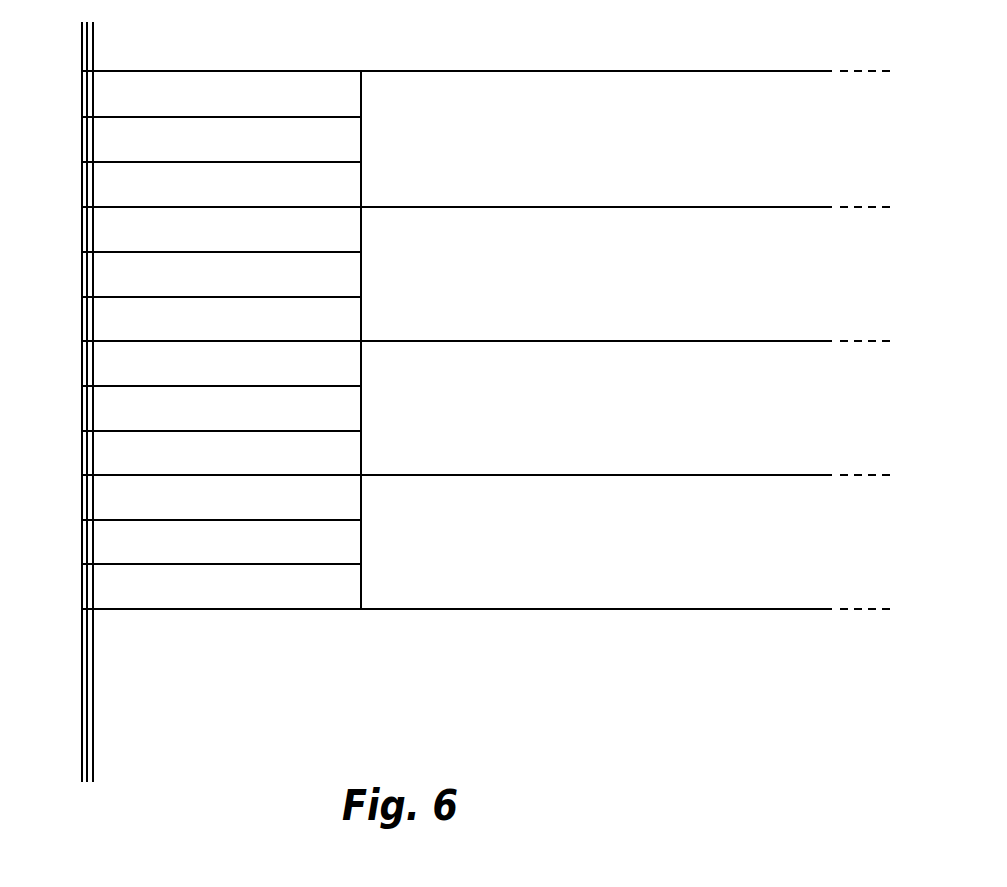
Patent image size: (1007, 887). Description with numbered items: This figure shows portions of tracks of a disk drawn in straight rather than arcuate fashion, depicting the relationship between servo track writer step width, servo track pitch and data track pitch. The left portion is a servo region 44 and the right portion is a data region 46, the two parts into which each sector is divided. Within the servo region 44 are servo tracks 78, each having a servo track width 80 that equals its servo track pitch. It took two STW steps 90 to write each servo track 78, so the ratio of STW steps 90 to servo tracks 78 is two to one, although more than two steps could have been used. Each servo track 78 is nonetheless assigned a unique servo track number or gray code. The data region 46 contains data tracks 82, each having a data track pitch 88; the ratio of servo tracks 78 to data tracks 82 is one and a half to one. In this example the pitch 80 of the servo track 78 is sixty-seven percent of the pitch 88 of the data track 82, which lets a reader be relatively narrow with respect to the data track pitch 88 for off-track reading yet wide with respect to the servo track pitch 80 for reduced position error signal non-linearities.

The servo region 44 is at (358, 613).
The data region 46 is at (362, 613).
The servo track 78 is at (73, 75).
The servo track width 80 is at (114, 162).
The data track 82 is at (682, 77).
The data track pitch 88 is at (478, 541).
The STW step 90 is at (254, 159).